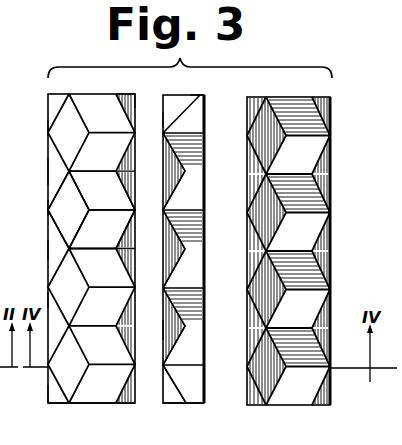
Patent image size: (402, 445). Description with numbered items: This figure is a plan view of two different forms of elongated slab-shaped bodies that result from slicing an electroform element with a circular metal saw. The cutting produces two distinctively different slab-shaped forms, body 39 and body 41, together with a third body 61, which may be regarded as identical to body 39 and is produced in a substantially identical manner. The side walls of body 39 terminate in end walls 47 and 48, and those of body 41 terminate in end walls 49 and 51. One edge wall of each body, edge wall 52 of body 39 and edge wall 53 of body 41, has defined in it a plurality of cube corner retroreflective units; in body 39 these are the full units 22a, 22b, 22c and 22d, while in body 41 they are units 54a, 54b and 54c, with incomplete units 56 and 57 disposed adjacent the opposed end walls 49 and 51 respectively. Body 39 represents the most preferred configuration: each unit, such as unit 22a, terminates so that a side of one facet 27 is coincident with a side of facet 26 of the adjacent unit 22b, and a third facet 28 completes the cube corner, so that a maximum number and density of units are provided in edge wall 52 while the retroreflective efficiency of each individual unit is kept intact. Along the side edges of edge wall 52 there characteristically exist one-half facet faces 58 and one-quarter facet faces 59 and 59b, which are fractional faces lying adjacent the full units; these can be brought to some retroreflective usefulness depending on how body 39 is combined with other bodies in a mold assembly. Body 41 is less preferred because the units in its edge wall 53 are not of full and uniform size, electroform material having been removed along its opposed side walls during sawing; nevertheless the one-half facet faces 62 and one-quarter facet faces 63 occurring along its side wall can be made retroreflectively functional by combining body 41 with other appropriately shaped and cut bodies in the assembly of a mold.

The end wall 47 is at (84, 89).
The slab shaped body 39 is at (139, 86).
The end wall 49 is at (187, 88).
The slab shaped body 41 is at (223, 85).
The body 61 is at (311, 89).
The one quarter facet face 59 is at (128, 97).
The edge region 59b is at (53, 181).
The one quarter facet face 63 is at (165, 118).
The incomplete unit 56 is at (197, 120).
The cube corner retroreflective unit 22a is at (48, 129).
The cube corner retroreflective unit 22b is at (48, 209).
The cube corner retroreflective unit 22c is at (48, 302).
The cube corner retroreflective unit 22d is at (48, 394).
The edge wall 52 is at (30, 249).
The facet 26 is at (108, 201).
The left rhombic face 28 is at (76, 221).
The facet 27 is at (112, 241).
The one half facet face 58 is at (125, 178).
The cube corner retroreflective unit 54a is at (192, 166).
The cube corner retroreflective unit 54b is at (191, 246).
The cube corner retroreflective unit 54c is at (191, 328).
The edge wall 53 is at (222, 284).
The one half facet face 62 is at (170, 331).
The incomplete unit 57 is at (194, 394).
The end wall 51 is at (173, 405).
The end wall 48 is at (91, 423).